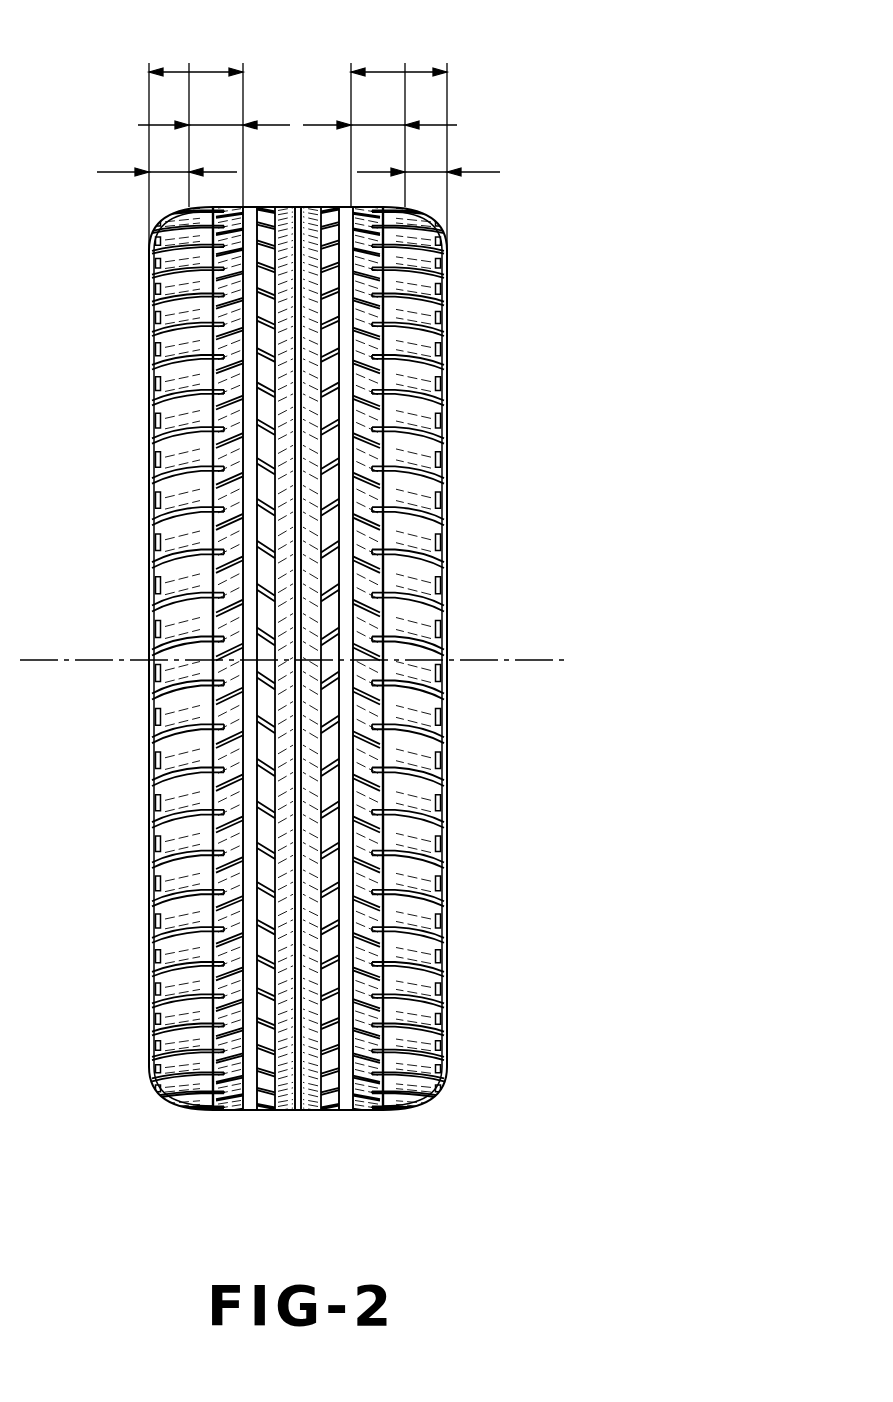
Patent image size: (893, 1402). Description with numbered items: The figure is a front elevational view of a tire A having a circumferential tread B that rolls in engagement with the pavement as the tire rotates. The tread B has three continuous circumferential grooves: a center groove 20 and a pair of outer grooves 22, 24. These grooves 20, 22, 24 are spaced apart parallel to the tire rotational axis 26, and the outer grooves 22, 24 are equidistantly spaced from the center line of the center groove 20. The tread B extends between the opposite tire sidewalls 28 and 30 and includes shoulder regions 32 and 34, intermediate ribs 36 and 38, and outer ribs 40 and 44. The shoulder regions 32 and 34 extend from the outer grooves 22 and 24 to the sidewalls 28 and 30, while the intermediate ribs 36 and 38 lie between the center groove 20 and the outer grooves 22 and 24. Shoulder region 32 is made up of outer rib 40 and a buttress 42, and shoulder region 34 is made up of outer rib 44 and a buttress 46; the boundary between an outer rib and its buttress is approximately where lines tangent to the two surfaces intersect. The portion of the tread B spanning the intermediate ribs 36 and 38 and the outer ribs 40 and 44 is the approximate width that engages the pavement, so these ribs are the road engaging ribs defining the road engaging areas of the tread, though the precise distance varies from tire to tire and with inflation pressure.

The center groove 20 is at (294, 1110).
The outer groove 22 is at (247, 1108).
The outer groove 24 is at (340, 1108).
The tire rotational axis 26 is at (540, 660).
The tire sidewall 28 is at (148, 848).
The tire sidewall 30 is at (443, 848).
The shoulder region 32 is at (197, 72).
The shoulder region 34 is at (398, 72).
The intermediate rib 36 is at (273, 1110).
The intermediate rib 38 is at (313, 1110).
The outer rib 40 is at (213, 123).
The buttress 42 is at (168, 168).
The outer rib 44 is at (380, 123).
The buttress 46 is at (425, 170).
The tire A is at (632, 268).
The circumferential tread B is at (465, 440).